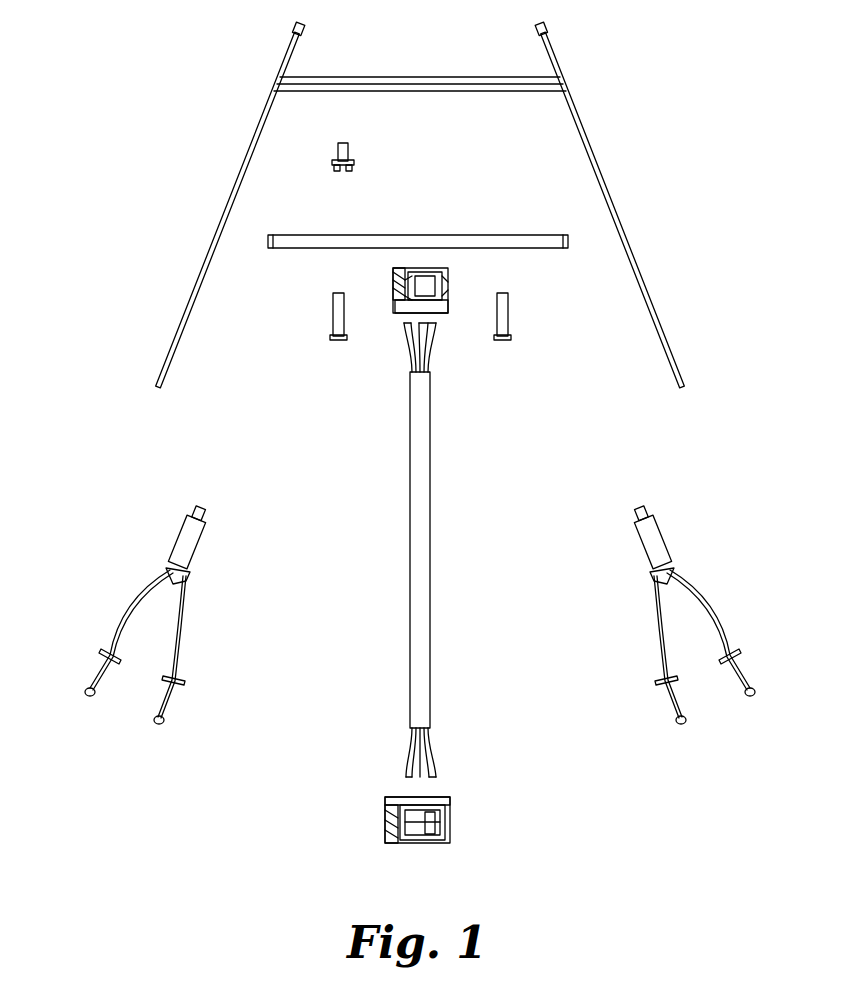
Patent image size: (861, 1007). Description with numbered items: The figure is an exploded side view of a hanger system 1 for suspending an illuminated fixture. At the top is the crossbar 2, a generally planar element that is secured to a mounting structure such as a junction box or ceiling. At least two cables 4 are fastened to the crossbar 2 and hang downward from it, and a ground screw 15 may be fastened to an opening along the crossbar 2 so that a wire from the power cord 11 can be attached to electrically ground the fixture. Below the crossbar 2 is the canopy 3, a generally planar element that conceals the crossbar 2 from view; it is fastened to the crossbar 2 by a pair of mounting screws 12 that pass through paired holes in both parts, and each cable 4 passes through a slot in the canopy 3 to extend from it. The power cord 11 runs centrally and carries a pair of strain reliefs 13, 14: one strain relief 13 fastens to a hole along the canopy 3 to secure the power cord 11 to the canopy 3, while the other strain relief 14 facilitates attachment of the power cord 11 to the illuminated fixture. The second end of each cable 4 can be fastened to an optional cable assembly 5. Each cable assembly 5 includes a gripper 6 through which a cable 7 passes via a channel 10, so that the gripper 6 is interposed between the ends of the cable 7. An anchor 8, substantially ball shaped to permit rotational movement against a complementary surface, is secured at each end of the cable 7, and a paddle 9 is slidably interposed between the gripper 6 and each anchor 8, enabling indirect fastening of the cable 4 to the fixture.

The hanger system 1 is at (162, 116).
The crossbar 2 is at (440, 77).
The canopy 3 is at (292, 244).
The cable 4 is at (222, 222).
The cable assembly 5 is at (138, 540).
The gripper 6 is at (190, 548).
The cable 7 is at (125, 612).
The anchor 8 is at (90, 697).
The paddle 9 is at (98, 652).
The channel 10 is at (185, 573).
The power cord 11 is at (410, 493).
The mounting screw 12 is at (333, 318).
The strain relief 13 is at (398, 308).
The strain relief 14 is at (440, 820).
The ground screw 15 is at (350, 160).